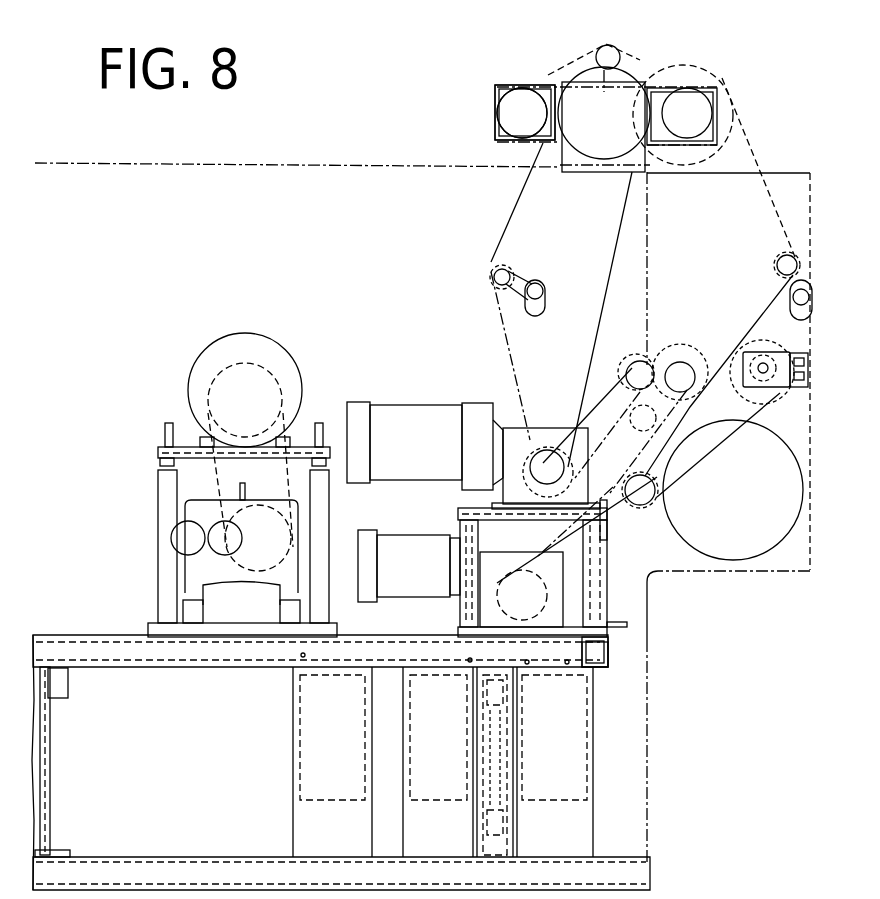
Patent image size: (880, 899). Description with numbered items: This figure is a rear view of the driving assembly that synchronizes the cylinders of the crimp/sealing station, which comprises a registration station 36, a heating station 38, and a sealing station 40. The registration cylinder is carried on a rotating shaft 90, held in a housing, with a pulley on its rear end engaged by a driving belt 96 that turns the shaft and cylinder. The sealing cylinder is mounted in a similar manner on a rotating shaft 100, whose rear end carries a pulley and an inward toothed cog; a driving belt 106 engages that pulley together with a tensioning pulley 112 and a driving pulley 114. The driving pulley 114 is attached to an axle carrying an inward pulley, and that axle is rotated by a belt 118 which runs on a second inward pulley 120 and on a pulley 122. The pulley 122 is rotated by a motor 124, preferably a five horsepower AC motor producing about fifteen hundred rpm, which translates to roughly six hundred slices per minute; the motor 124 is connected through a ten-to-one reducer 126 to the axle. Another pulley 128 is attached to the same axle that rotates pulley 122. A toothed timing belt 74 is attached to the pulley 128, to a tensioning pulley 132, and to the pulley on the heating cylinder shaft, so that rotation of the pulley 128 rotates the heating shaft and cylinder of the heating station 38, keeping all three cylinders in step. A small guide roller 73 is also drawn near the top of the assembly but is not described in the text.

The registration station 36 is at (497, 106).
The heating station 38 is at (628, 68).
The sealing station 40 is at (720, 103).
The guide roller 73 is at (596, 56).
The driving belt 74 is at (500, 243).
The rotating shaft 90 is at (510, 128).
The driving belt 96 is at (530, 82).
The rotating shaft 100 is at (712, 80).
The driving belt 106 is at (752, 138).
The tensioning pulley 112 is at (776, 262).
The driving pulley 114 is at (702, 366).
The belt 118 is at (641, 428).
The second inward pulley 120 is at (632, 366).
The pulley 122 is at (638, 478).
The motor 124 is at (432, 457).
The reducer 126 is at (470, 402).
The pulley 128 is at (546, 428).
The tensioning pulley 132 is at (512, 278).